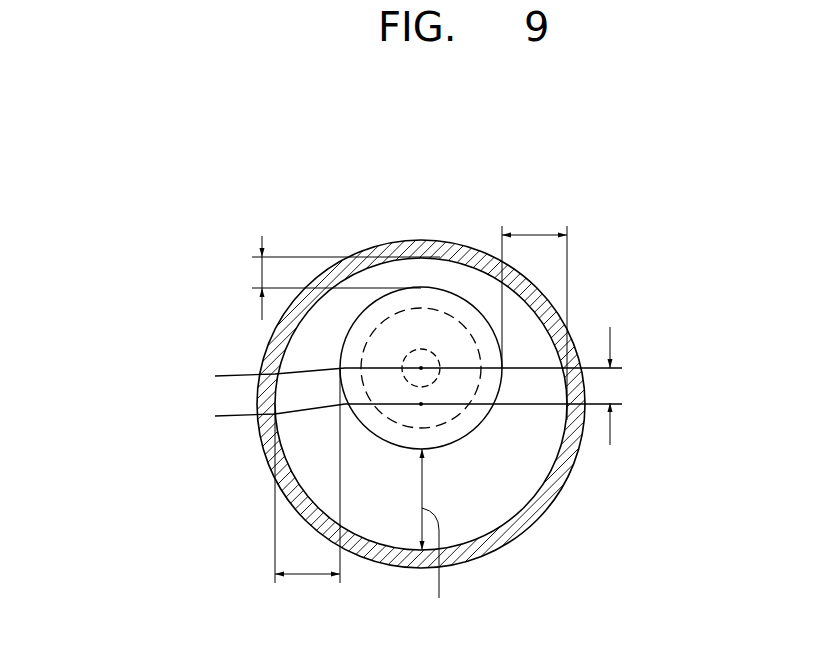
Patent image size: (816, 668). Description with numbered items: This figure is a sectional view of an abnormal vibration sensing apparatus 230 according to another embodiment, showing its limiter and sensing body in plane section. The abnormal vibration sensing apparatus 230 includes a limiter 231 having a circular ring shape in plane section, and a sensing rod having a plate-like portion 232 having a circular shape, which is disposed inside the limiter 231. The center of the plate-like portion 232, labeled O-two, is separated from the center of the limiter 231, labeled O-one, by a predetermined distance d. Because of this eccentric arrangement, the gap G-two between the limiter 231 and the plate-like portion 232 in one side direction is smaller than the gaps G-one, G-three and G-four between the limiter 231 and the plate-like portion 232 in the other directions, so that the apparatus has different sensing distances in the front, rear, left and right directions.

The abnormal vibration sensing apparatus 230 is at (170, 288).
The limiter 231 is at (570, 463).
The plate-like portion 232 is at (440, 426).